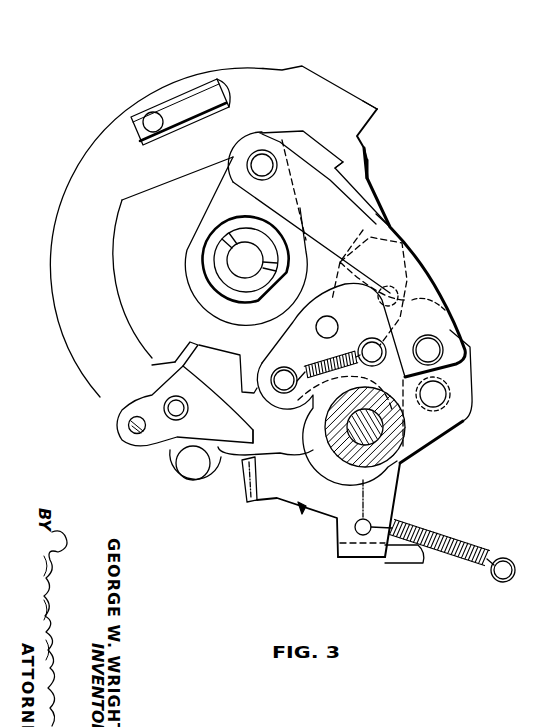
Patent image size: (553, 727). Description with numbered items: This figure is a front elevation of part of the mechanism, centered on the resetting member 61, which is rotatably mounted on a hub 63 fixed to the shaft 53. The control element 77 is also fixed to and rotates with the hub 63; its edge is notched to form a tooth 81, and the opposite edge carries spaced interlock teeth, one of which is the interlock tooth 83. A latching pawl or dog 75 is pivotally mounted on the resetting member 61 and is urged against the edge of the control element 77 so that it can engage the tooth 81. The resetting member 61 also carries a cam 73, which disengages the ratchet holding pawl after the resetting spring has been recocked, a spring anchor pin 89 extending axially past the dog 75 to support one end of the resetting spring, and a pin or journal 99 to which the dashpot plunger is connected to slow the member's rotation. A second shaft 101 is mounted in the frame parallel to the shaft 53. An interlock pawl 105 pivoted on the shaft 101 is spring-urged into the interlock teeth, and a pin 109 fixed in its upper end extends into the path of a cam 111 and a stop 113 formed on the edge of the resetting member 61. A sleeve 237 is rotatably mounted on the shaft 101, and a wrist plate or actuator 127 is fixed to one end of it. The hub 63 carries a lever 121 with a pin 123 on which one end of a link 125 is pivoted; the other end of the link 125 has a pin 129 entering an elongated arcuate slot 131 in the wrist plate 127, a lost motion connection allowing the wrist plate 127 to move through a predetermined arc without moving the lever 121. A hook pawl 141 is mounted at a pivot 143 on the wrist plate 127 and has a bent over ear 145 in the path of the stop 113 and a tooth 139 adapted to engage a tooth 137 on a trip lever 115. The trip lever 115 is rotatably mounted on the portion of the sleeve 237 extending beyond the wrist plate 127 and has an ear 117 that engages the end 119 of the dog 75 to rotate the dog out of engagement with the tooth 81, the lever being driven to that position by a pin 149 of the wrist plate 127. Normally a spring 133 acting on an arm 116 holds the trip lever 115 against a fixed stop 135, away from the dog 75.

The resetting member 61 is at (84, 146).
The cam 73 is at (281, 70).
The stop 113 is at (366, 101).
The cam 111 is at (370, 164).
The control element 77 is at (103, 255).
The pin or journal 99 is at (150, 114).
The lever 121 is at (202, 223).
The pin 123 is at (254, 158).
The interlock tooth 83 is at (346, 165).
The link 125 is at (368, 221).
The hub 63 is at (217, 266).
The shaft 53 is at (242, 267).
The hook pawl 141 is at (278, 342).
The tooth 81 is at (199, 344).
The latching pawl or dog 75 is at (152, 388).
The end of dog 119 is at (253, 437).
The spring anchor pin 89 is at (186, 472).
The tooth 139 is at (304, 388).
The tooth 137 is at (306, 396).
The pivot 143 is at (319, 317).
The pin 109 is at (380, 310).
The bent over ear 145 is at (424, 253).
The interlock pawl 105 is at (437, 288).
The elongated arcuate slot 131 is at (447, 305).
The pin 129 is at (434, 348).
The wrist plate or actuator 127 is at (463, 362).
The sleeve 237 is at (409, 461).
The pin 149 is at (448, 409).
The second shaft 101 is at (334, 458).
The ear 117 is at (241, 483).
The trip lever 115 is at (300, 510).
The arm 116 is at (340, 537).
The spring 133 is at (437, 541).
The fixed stop 135 is at (403, 562).